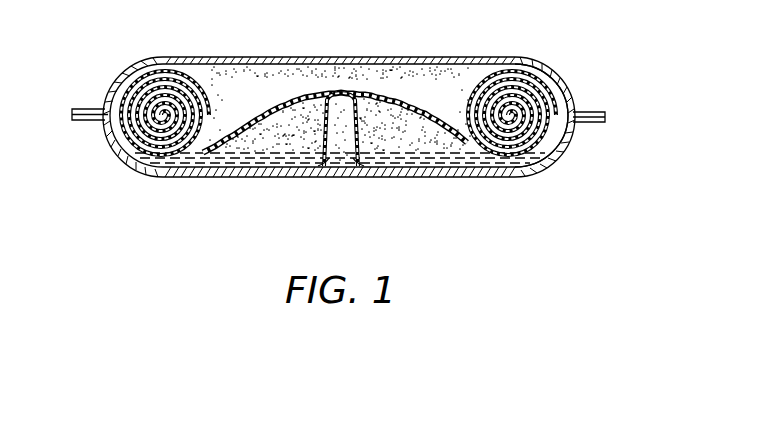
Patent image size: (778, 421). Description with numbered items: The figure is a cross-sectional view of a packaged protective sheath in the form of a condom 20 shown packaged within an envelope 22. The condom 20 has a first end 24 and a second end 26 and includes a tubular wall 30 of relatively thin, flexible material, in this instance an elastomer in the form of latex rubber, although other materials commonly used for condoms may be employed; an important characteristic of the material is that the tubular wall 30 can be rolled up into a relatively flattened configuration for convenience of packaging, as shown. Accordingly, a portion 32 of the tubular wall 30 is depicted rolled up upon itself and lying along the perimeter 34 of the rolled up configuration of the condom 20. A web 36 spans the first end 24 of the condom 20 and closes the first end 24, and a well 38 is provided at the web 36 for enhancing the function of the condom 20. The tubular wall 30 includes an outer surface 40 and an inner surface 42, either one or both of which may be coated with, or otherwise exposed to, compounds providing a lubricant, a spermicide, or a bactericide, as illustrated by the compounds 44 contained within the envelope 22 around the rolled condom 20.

The condom 20 is at (178, 178).
The envelope 22 is at (220, 57).
The first end 24 is at (413, 158).
The second end 26 is at (513, 112).
The tubular wall 30 is at (550, 137).
The portion of tubular wall 32 is at (347, 76).
The perimeter 34 is at (562, 110).
The web 36 is at (292, 165).
The well 38 is at (358, 121).
The outer surface 40 is at (248, 146).
The inner surface 42 is at (225, 170).
The compounds 44 is at (338, 164).